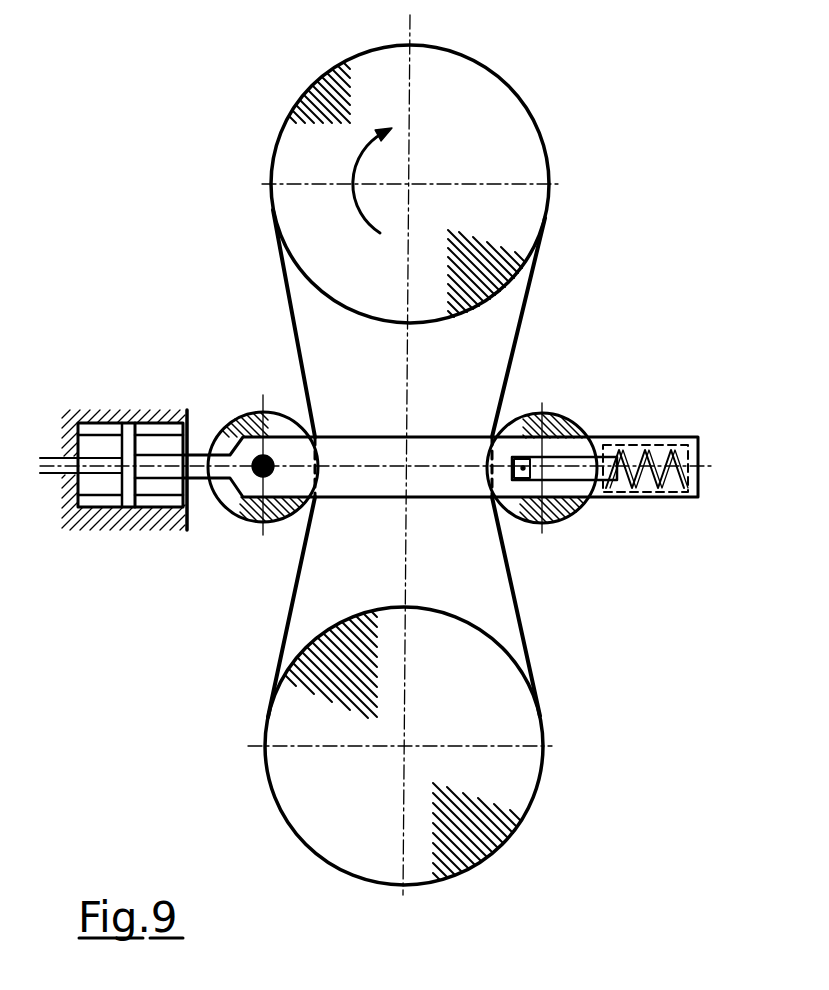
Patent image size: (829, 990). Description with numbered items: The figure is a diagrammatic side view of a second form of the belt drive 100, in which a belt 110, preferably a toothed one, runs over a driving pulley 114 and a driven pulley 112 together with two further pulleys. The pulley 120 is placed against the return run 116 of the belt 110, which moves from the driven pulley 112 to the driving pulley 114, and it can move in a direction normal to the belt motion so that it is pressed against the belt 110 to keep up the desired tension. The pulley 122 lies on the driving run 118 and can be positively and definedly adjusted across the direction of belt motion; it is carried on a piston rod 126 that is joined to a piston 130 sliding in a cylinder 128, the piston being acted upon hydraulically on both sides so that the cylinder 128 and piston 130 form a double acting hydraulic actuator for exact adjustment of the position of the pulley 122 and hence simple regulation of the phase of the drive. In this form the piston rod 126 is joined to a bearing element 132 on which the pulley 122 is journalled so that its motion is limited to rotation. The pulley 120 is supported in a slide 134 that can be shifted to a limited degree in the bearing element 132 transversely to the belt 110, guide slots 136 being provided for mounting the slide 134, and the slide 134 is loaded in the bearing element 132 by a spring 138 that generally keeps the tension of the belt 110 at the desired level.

The belt drive 100 is at (266, 626).
The belt 110 is at (293, 348).
The driven pulley 112 is at (515, 813).
The driving pulley 114 is at (523, 135).
The return run 116 is at (519, 325).
The driving run 118 is at (283, 283).
The pulley 120 is at (552, 413).
The pulley 122 is at (245, 520).
The piston rod 126 is at (155, 507).
The cylinder 128 is at (100, 507).
The piston 130 is at (122, 423).
The bearing element 132 is at (440, 501).
The slide 134 is at (558, 467).
The guide slots 136 is at (527, 490).
The spring 138 is at (673, 493).